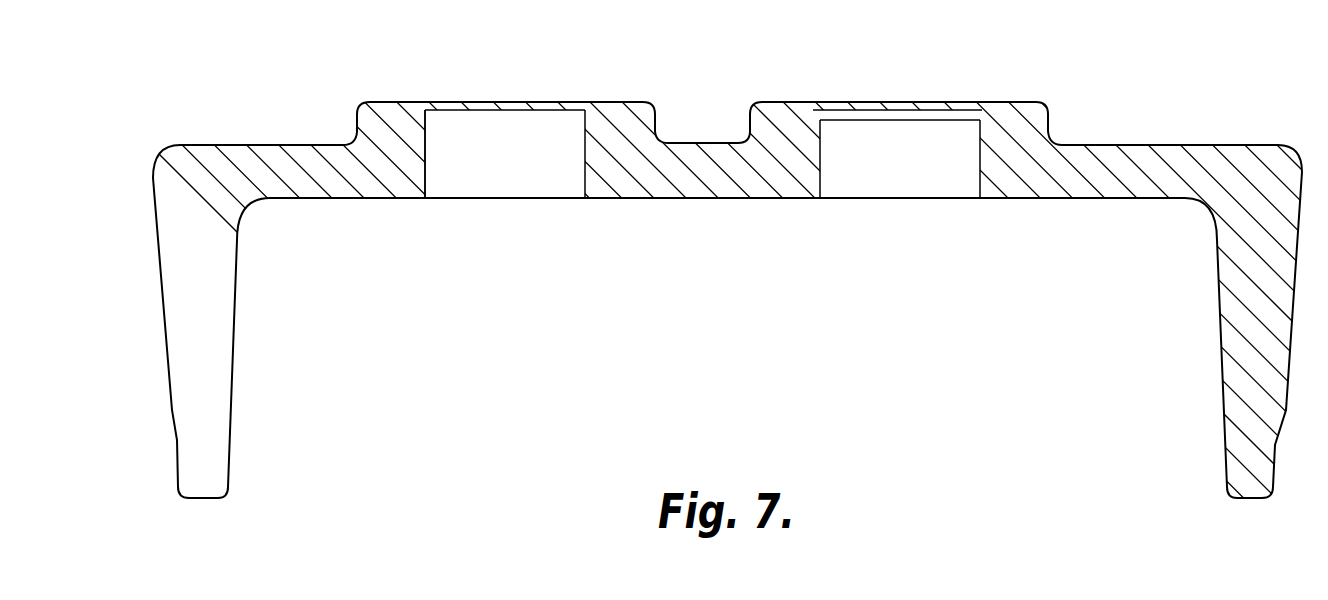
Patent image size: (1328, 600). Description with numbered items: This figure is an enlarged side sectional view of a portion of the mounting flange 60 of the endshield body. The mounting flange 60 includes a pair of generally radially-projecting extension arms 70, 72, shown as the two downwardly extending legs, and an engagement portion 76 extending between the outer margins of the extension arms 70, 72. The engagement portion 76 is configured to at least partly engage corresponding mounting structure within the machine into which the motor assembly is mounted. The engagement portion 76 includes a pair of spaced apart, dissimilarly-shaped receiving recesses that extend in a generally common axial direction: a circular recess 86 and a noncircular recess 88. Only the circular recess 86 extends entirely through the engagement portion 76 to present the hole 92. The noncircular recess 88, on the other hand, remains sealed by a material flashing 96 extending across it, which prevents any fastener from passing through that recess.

The mounting flange 60 is at (250, 112).
The extension arm 70 is at (207, 357).
The extension arm 72 is at (1253, 365).
The engagement portion 76 is at (660, 200).
The circular recess 86 is at (428, 163).
The noncircular recess 88 is at (822, 162).
The hole 92 is at (527, 143).
The material flashing 96 is at (913, 110).